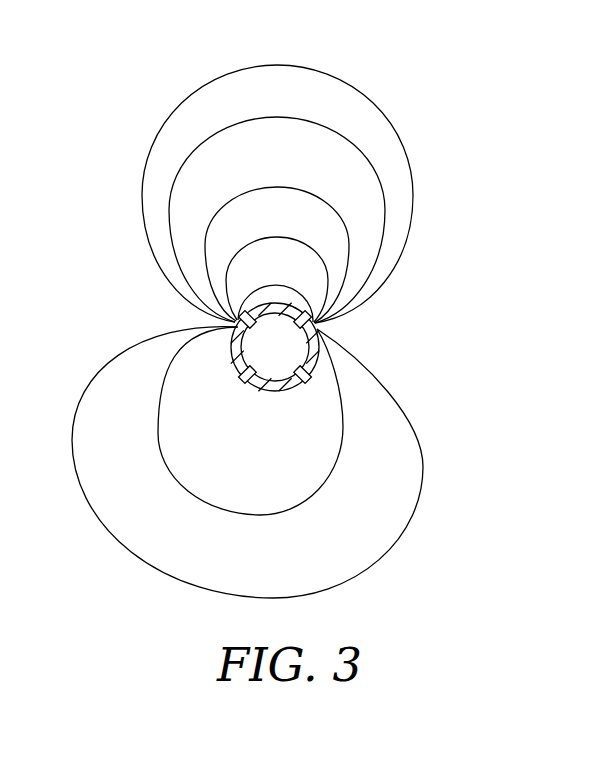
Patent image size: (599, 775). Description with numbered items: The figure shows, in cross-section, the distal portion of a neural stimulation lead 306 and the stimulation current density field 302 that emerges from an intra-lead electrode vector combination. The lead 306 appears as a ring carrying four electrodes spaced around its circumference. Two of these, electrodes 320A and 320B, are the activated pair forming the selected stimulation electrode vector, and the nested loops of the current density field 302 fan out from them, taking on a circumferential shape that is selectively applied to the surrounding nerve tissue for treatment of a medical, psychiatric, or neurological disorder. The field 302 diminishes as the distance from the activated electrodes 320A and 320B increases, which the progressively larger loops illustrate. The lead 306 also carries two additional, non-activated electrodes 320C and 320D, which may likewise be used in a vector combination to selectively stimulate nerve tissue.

The stimulation current density field 302 is at (280, 64).
The neural stimulation lead 306 is at (338, 378).
The electrode 320A is at (204, 311).
The electrode 320B is at (321, 333).
The non-activated electrode 320C is at (242, 373).
The non-activated electrode 320D is at (312, 378).